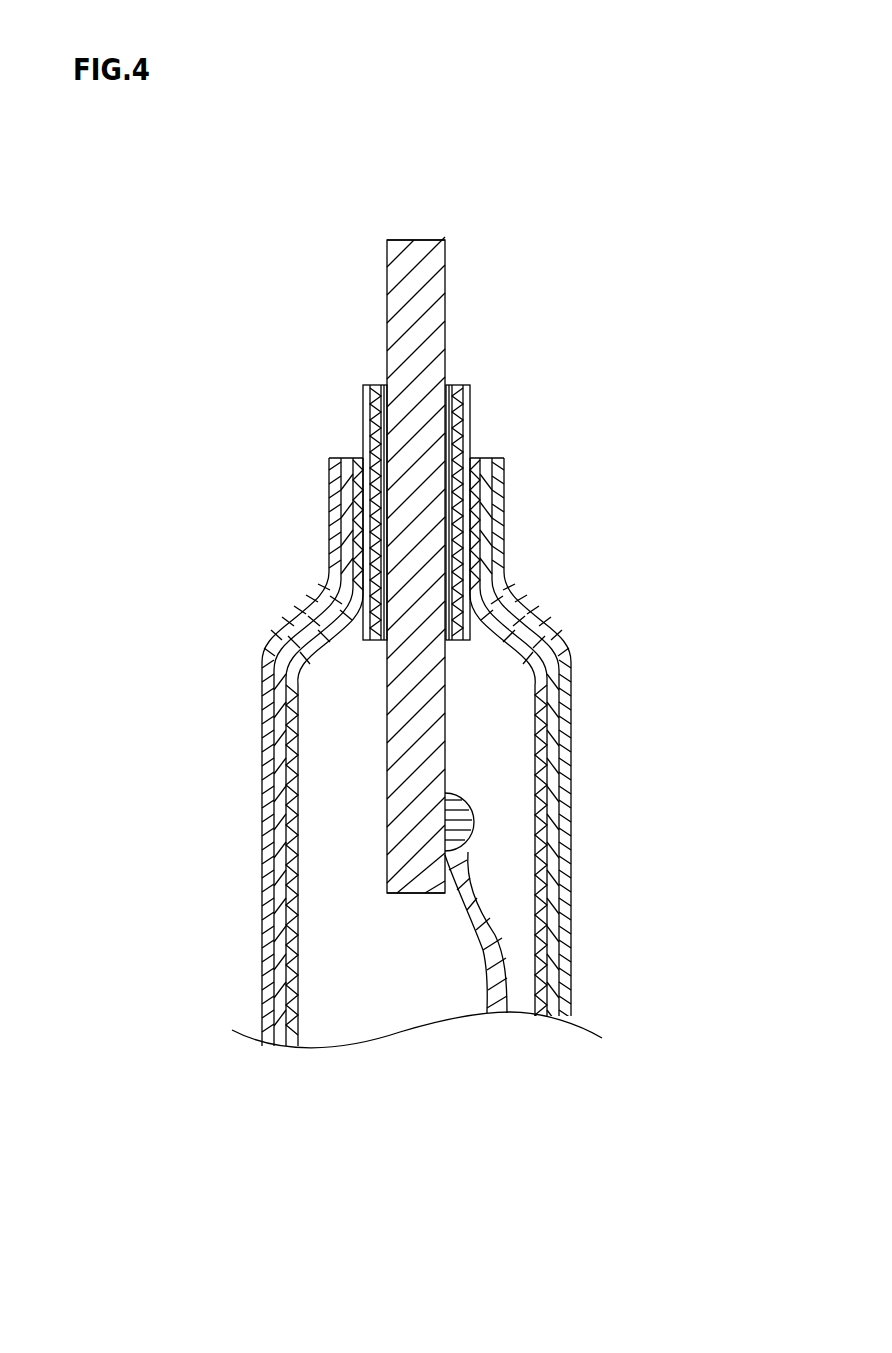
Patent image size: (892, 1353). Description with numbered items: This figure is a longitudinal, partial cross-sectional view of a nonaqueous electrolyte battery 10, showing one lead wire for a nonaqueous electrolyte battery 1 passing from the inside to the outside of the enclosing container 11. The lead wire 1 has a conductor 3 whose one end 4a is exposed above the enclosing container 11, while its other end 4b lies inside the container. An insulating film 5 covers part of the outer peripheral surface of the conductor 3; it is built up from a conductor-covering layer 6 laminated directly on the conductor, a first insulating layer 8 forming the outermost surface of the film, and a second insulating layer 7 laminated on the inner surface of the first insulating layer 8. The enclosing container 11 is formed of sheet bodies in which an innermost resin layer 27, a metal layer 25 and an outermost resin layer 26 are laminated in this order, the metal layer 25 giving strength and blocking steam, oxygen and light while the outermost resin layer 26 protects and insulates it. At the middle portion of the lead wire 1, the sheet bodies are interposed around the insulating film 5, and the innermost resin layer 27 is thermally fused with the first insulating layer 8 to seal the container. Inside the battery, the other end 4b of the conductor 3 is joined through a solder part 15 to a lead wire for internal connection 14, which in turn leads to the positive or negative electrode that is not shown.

The nonaqueous electrolyte battery 10 is at (222, 208).
The lead wire for a nonaqueous electrolyte battery 1 is at (333, 398).
The conductor 3 is at (403, 355).
The one end of conductor 4a is at (414, 240).
The other end of conductor 4b is at (413, 890).
The insulating film 5 is at (458, 382).
The conductor-covering layer 6 is at (470, 450).
The second insulating layer 7 is at (470, 432).
The first insulating layer 8 is at (470, 400).
The enclosing container 11 is at (280, 1058).
The lead wire for internal connection 14 is at (497, 998).
The solder part 15 is at (478, 808).
The metal layer 25 is at (333, 580).
The outermost resin layer 26 is at (328, 575).
The innermost resin layer 27 is at (310, 590).